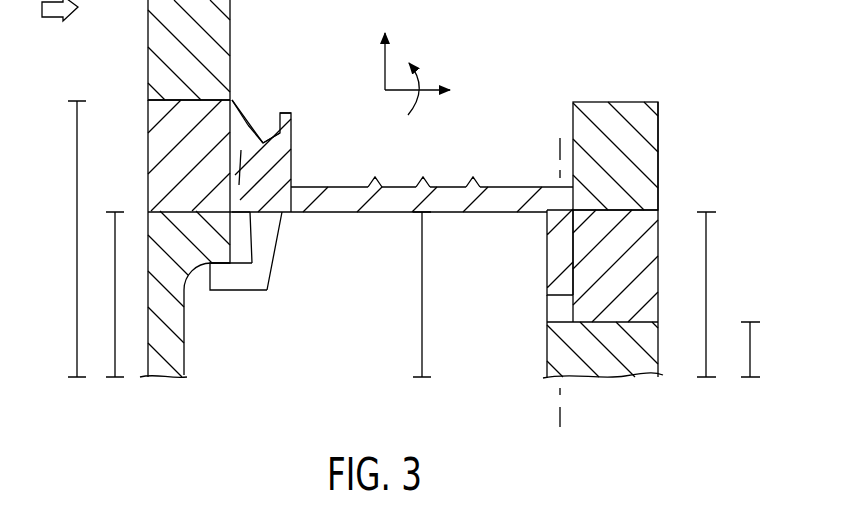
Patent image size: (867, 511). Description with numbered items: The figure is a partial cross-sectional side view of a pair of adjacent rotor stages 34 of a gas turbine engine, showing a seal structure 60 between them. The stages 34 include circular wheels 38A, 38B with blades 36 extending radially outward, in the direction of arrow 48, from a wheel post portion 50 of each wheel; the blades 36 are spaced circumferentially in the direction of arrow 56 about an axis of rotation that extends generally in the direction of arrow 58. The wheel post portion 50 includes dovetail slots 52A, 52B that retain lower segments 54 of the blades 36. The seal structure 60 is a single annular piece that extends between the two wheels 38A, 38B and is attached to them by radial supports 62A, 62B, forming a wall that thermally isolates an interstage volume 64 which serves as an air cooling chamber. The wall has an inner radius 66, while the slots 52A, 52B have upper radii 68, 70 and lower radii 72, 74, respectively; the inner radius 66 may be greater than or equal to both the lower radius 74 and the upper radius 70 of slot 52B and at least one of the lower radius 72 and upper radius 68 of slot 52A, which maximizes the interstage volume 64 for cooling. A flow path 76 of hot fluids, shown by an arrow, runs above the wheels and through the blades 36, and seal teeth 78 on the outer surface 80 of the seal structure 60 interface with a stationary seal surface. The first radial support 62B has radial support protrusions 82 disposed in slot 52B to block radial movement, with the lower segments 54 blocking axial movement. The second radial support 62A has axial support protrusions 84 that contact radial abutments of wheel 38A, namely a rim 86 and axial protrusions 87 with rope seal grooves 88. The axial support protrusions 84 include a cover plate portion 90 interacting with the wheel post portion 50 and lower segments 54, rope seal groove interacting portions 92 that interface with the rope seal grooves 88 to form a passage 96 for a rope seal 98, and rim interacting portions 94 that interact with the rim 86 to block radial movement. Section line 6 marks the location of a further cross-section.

The section line 6- 6 is at (553, 148).
The rotor stages 34 is at (190, 390).
The blades 36 is at (147, 24).
The wheel 38A is at (148, 328).
The wheel 38B is at (661, 352).
The radial direction arrow 48 is at (384, 64).
The wheel post portion 50 is at (140, 163).
The slot 52A is at (163, 183).
The slot 52B is at (631, 303).
The lower segments 54 is at (148, 126).
The circumferential direction arrow 56 is at (419, 108).
The axial direction arrow 58 is at (430, 84).
The seal structure 60 is at (349, 213).
The second radial support 62A is at (267, 116).
The first radial support 62B is at (537, 239).
The interstage volume 64 is at (469, 284).
The inner radius 66 is at (420, 272).
The upper radius 68 is at (74, 119).
The upper radius 70 is at (707, 284).
The lower radius 72 is at (114, 275).
The lower radius 74 is at (749, 366).
The flow path 76 is at (55, 24).
The seal teeth 78 is at (377, 182).
The outer surface 80 is at (495, 181).
The radial support protrusions 82 is at (552, 267).
The axial support protrusions 84 is at (300, 172).
The rim 86 is at (217, 240).
The axial protrusions 87 is at (240, 186).
The rope seal grooves 88 is at (246, 128).
The cover plate portion 90 is at (256, 122).
The rope seal groove interacting portions 92 is at (252, 238).
The rim interacting portions 94 is at (228, 285).
The passage 96 is at (240, 210).
The rope seal 98 is at (296, 117).